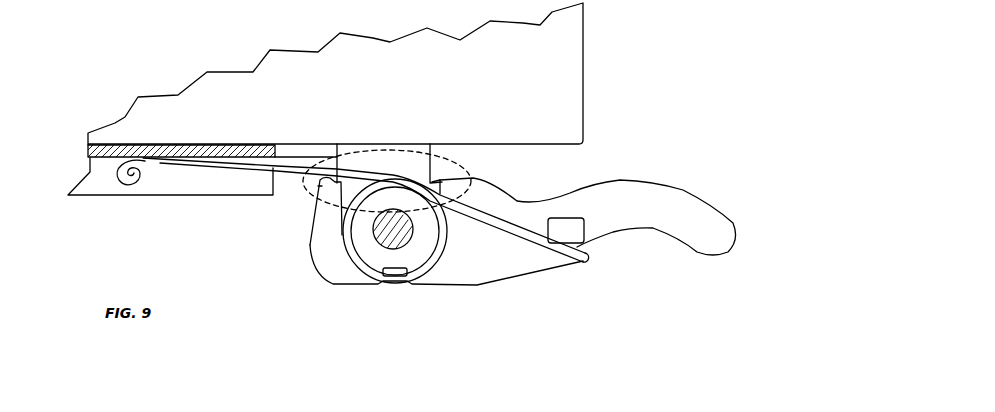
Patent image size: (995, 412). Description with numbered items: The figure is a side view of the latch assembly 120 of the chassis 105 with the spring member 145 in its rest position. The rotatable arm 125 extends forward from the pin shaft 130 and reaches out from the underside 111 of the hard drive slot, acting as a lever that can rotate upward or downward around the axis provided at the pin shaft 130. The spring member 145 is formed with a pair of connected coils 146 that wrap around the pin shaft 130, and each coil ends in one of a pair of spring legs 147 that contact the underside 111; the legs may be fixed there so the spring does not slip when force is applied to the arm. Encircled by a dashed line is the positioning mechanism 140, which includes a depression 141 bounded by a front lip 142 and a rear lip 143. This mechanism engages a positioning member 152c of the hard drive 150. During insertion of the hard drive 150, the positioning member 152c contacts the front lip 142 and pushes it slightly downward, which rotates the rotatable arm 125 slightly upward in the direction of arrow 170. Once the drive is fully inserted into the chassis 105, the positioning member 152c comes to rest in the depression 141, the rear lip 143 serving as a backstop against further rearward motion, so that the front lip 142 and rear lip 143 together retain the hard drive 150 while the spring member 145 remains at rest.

The underside of hard drive slot 111 is at (88, 150).
The hard drive 150 is at (335, 74).
The positioning member 152c is at (387, 178).
The chassis 105 is at (170, 176).
The pair of spring legs 147 is at (163, 163).
The spring member 145 is at (524, 246).
The positioning mechanism 140 is at (333, 196).
The rear lip 143 is at (318, 188).
The depression 141 is at (415, 198).
The pin shaft 130 is at (380, 243).
The pair of connected coils 146 is at (392, 280).
The rotatable arm 125 is at (588, 216).
The front lip 142 is at (441, 183).
The latch assembly 120 is at (621, 311).
The arrow 170 is at (770, 221).